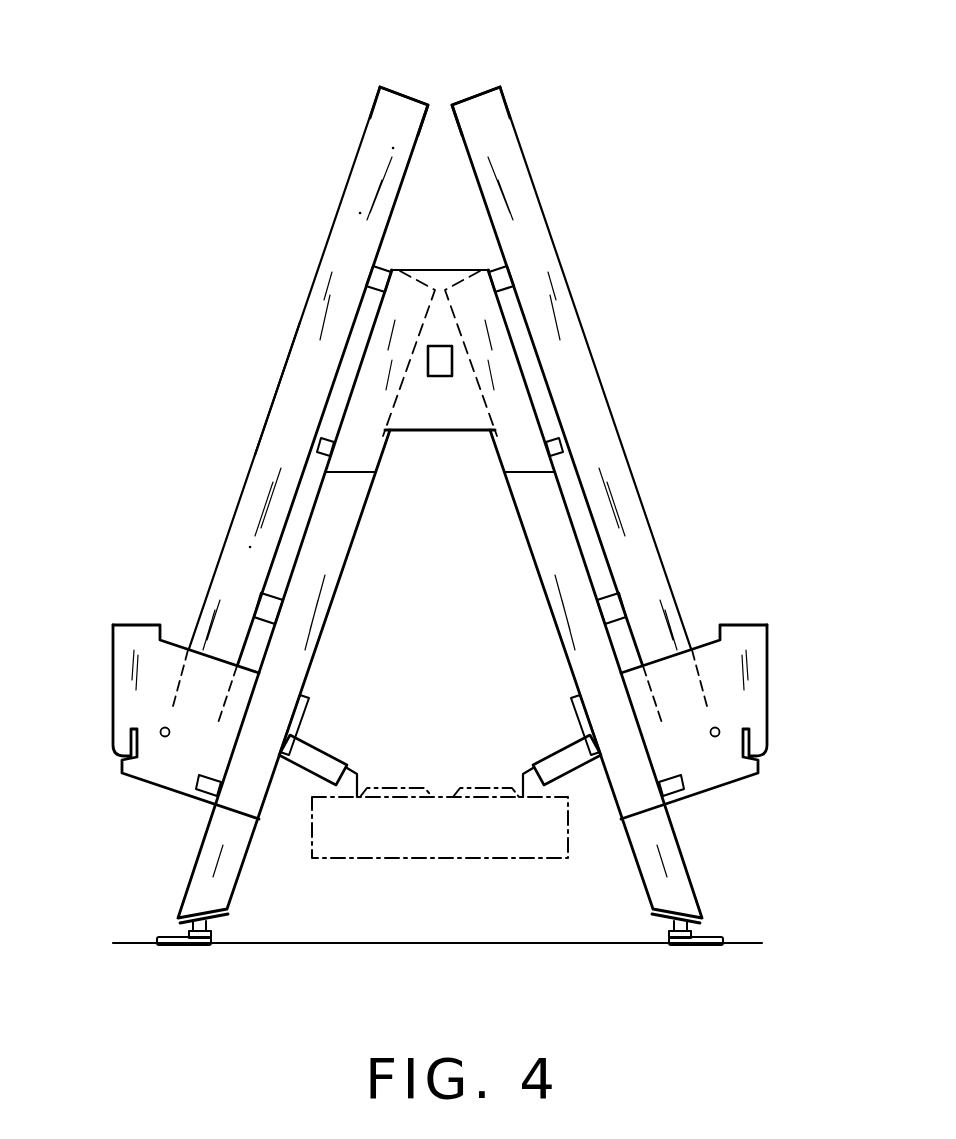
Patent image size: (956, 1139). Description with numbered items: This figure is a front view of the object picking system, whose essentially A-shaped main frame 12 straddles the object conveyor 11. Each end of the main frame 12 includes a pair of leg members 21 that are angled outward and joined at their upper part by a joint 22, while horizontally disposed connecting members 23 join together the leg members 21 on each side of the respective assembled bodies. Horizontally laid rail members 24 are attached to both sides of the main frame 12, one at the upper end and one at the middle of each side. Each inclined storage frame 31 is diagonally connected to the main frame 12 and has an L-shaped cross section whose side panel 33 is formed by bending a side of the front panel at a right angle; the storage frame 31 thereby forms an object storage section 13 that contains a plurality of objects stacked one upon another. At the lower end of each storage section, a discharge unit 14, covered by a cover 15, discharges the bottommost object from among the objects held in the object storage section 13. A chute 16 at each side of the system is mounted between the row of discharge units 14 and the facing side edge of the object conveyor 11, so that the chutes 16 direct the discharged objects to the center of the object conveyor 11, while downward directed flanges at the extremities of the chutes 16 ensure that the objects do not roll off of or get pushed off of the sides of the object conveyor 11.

The object conveyor 11 is at (434, 810).
The main frame 12 is at (530, 381).
The object storage section 13 is at (472, 97).
The object discharge unit 14 is at (157, 708).
The cover 15 is at (113, 660).
The chute 16 is at (348, 765).
The leg member 21 is at (338, 532).
The joint 22 is at (447, 413).
The connecting member 23 is at (336, 447).
The rail member 24 is at (373, 268).
The storage frame 31 is at (283, 372).
The side panel 33 is at (278, 413).